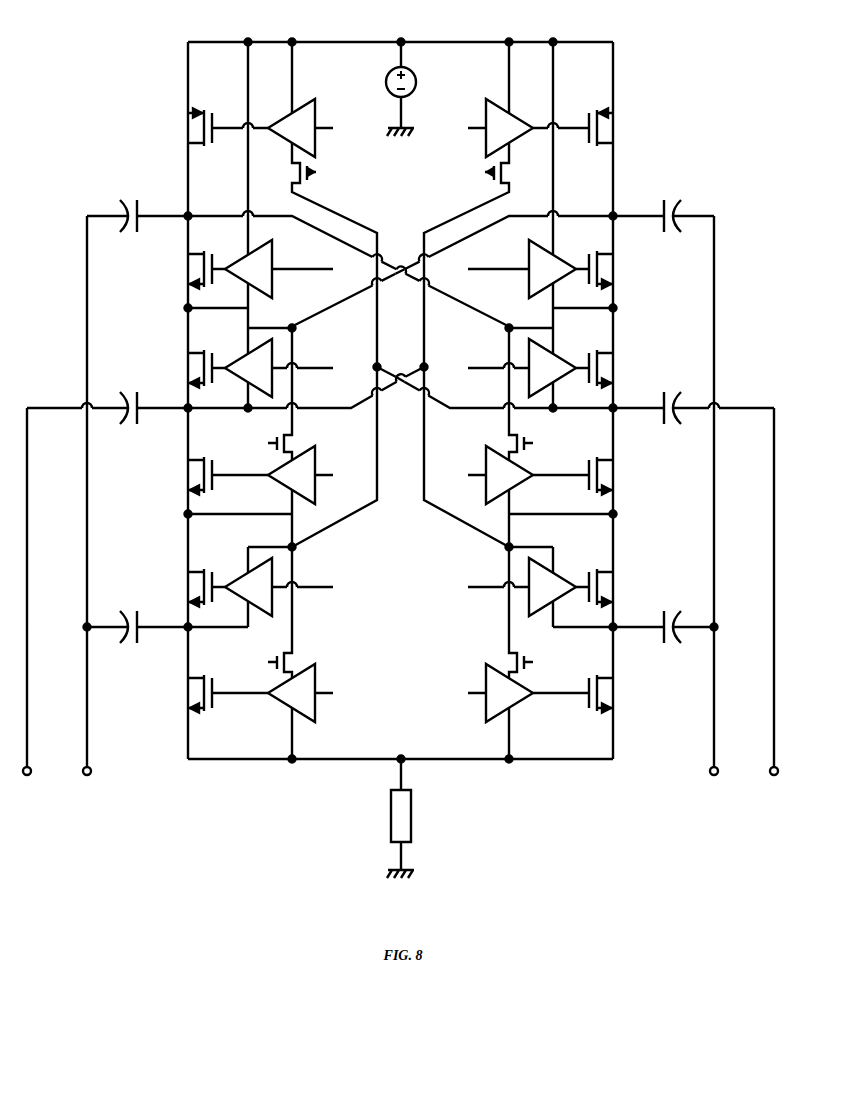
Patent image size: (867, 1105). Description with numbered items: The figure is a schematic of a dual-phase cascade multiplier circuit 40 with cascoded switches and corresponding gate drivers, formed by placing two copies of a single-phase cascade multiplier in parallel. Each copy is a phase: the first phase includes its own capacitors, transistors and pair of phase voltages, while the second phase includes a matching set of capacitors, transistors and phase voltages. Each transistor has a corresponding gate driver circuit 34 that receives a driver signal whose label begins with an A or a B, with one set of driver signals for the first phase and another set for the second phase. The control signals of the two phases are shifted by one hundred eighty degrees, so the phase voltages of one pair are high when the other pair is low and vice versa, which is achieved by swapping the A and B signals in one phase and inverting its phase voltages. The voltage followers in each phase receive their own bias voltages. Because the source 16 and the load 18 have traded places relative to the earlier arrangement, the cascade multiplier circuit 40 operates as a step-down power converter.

The dual-phase cascade multiplier circuit 40 is at (106, 87).
The source 16 is at (387, 83).
The load 18 is at (391, 817).
The gate driver circuit 34 is at (400, 410).